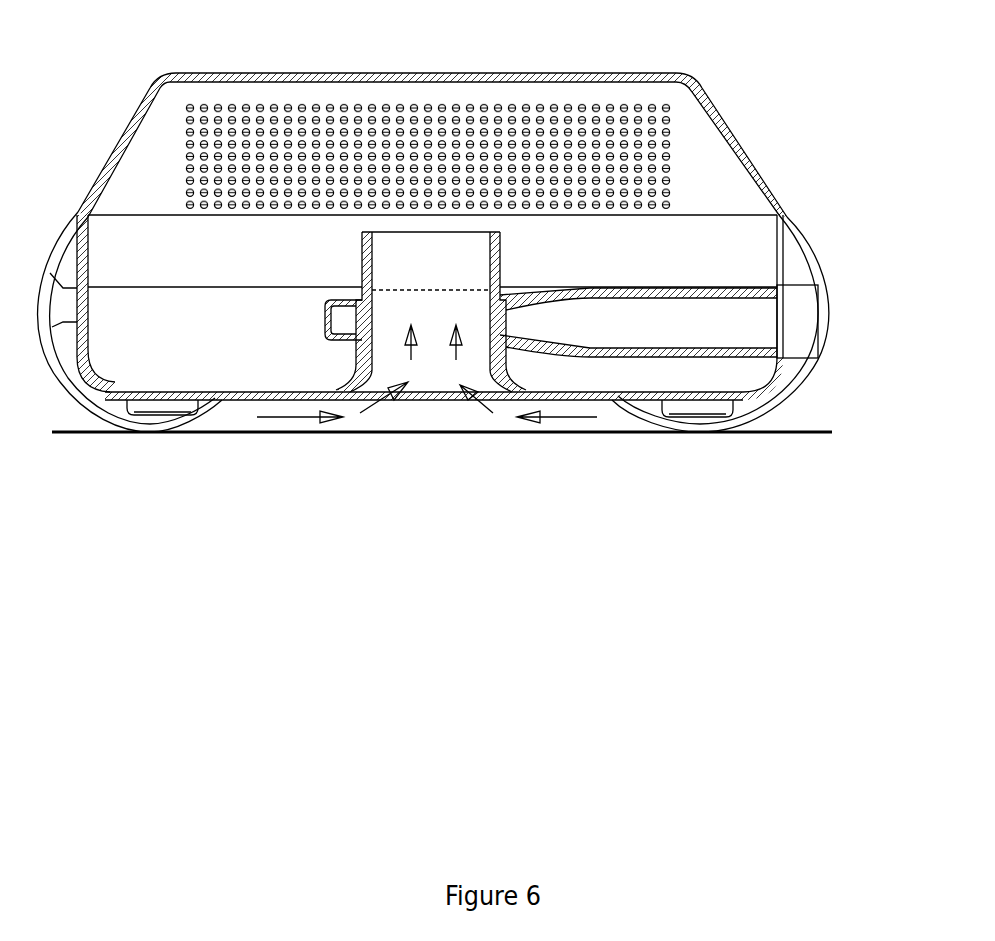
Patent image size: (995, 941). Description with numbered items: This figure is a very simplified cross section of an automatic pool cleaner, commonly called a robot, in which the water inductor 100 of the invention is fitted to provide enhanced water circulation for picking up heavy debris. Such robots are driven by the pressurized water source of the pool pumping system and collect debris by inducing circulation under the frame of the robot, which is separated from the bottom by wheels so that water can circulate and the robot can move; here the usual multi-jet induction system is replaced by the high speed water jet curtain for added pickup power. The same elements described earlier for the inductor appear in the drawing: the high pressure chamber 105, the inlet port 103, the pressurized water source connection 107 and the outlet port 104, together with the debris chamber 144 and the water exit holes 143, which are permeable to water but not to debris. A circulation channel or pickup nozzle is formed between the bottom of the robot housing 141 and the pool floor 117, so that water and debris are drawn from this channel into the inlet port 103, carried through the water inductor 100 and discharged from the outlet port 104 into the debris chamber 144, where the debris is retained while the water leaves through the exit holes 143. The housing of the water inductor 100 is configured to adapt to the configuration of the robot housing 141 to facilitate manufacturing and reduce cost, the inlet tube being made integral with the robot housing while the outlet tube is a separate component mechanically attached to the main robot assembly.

The water inductor 100 is at (417, 245).
The inlet port 103 is at (428, 370).
The outlet port 104 is at (435, 209).
The high pressure chamber 105 is at (345, 322).
The pressurized water source connection 107 is at (798, 320).
The pool floor 117 is at (492, 433).
The robot housing 141 is at (782, 213).
The water exit holes 143 is at (240, 103).
The debris chamber 144 is at (178, 235).